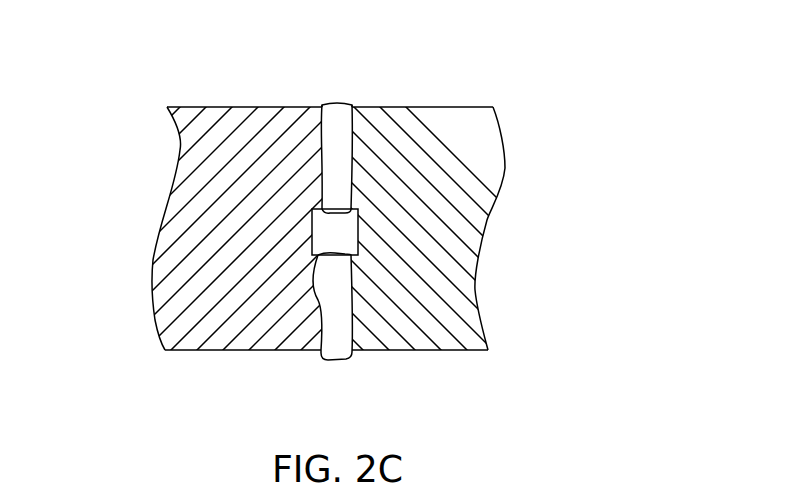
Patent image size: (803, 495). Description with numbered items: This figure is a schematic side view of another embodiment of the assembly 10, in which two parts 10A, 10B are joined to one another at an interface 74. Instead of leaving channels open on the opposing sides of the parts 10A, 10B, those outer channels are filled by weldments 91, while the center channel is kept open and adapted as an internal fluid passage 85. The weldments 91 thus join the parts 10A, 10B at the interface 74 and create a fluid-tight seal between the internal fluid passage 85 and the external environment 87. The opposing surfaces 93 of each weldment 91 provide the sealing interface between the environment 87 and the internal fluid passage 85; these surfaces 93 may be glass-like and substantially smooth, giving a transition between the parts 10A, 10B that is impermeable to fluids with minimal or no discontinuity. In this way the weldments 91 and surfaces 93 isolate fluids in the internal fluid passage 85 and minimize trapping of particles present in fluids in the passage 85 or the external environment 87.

The assembly 10 is at (150, 80).
The part 10A is at (152, 278).
The part 10B is at (505, 170).
The interface 74 is at (368, 78).
The internal fluid passage 85 is at (350, 237).
The external environment 87 is at (353, 61).
The weldment 91 is at (345, 162).
The opposing surfaces 93 is at (322, 105).